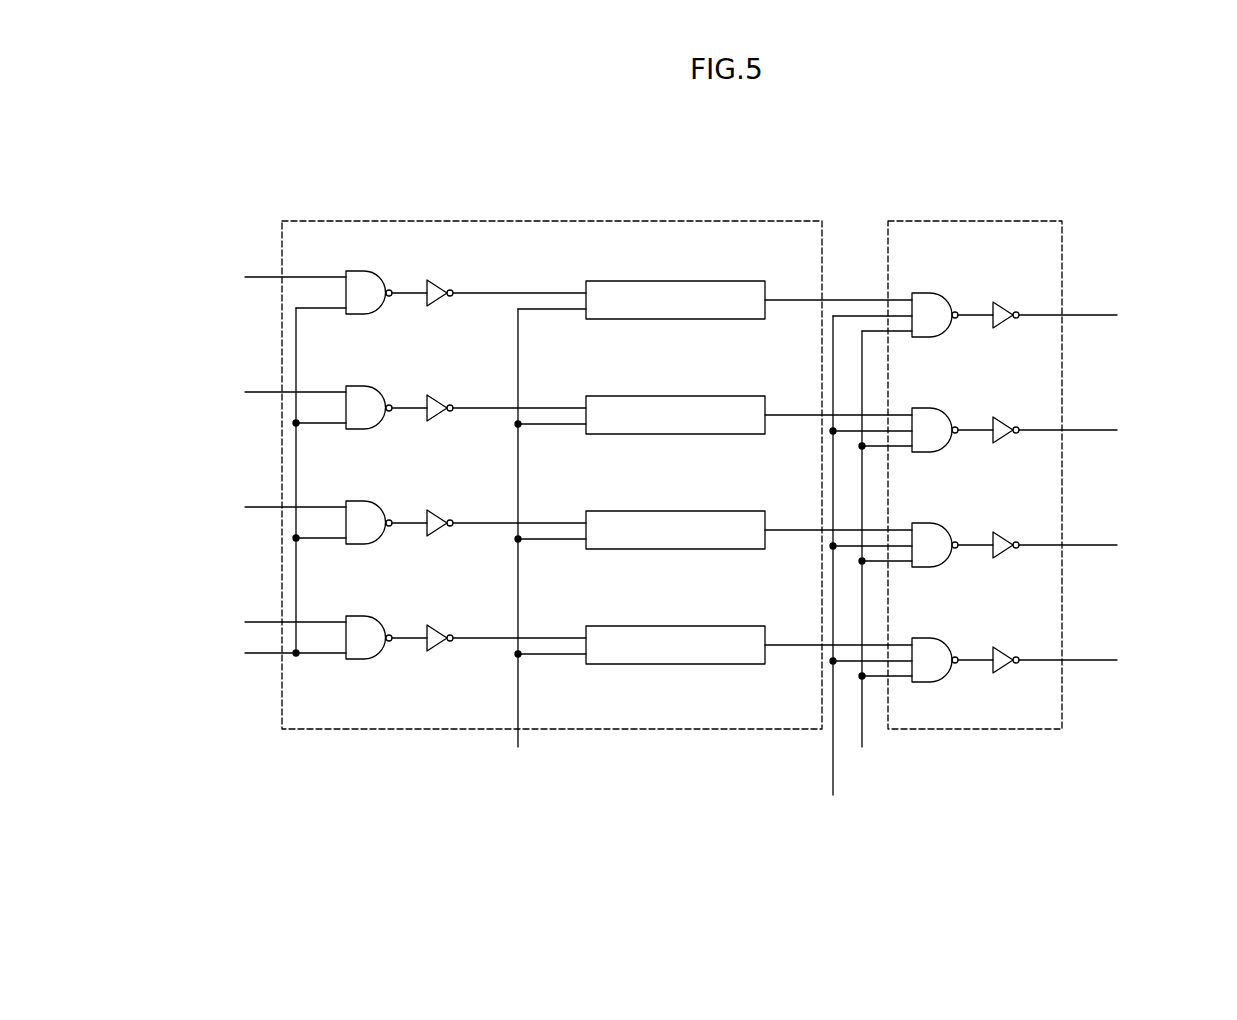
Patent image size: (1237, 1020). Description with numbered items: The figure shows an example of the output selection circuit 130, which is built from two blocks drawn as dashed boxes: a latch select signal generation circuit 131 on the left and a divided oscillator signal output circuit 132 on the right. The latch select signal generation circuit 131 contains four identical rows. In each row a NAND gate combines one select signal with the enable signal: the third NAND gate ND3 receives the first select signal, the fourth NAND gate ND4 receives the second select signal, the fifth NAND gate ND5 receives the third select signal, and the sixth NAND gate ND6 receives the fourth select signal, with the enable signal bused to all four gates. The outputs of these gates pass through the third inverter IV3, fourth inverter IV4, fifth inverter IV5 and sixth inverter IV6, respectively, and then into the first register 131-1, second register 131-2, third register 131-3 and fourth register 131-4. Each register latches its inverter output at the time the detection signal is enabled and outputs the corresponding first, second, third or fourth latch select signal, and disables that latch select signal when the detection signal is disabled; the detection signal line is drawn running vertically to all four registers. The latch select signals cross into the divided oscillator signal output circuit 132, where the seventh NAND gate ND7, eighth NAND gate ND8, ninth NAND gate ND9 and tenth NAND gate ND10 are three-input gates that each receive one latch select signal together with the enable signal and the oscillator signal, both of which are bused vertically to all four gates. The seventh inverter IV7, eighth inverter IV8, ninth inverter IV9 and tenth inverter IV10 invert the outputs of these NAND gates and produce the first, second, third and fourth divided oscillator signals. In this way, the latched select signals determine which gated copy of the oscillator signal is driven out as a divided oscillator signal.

The output selection circuit 130 is at (1227, 176).
The latch select signal generation circuit 131 is at (553, 221).
The divided oscillator signal output circuit 132 is at (975, 221).
The first register 131-1 is at (699, 281).
The second register 131-2 is at (699, 396).
The third register 131-3 is at (699, 511).
The fourth register 131-4 is at (699, 626).
The third NAND gate ND3 is at (368, 271).
The fourth NAND gate ND4 is at (368, 386).
The fifth NAND gate ND5 is at (368, 501).
The sixth NAND gate ND6 is at (368, 616).
The seventh NAND gate ND7 is at (934, 293).
The eighth NAND gate ND8 is at (934, 408).
The ninth NAND gate ND9 is at (934, 523).
The tenth NAND gate ND10 is at (934, 638).
The third inverter IV3 is at (440, 286).
The fourth inverter IV4 is at (440, 401).
The fifth inverter IV5 is at (440, 516).
The sixth inverter IV6 is at (440, 631).
The seventh inverter IV7 is at (1004, 309).
The eighth inverter IV8 is at (1004, 424).
The ninth inverter IV9 is at (1004, 539).
The tenth inverter IV10 is at (1004, 654).